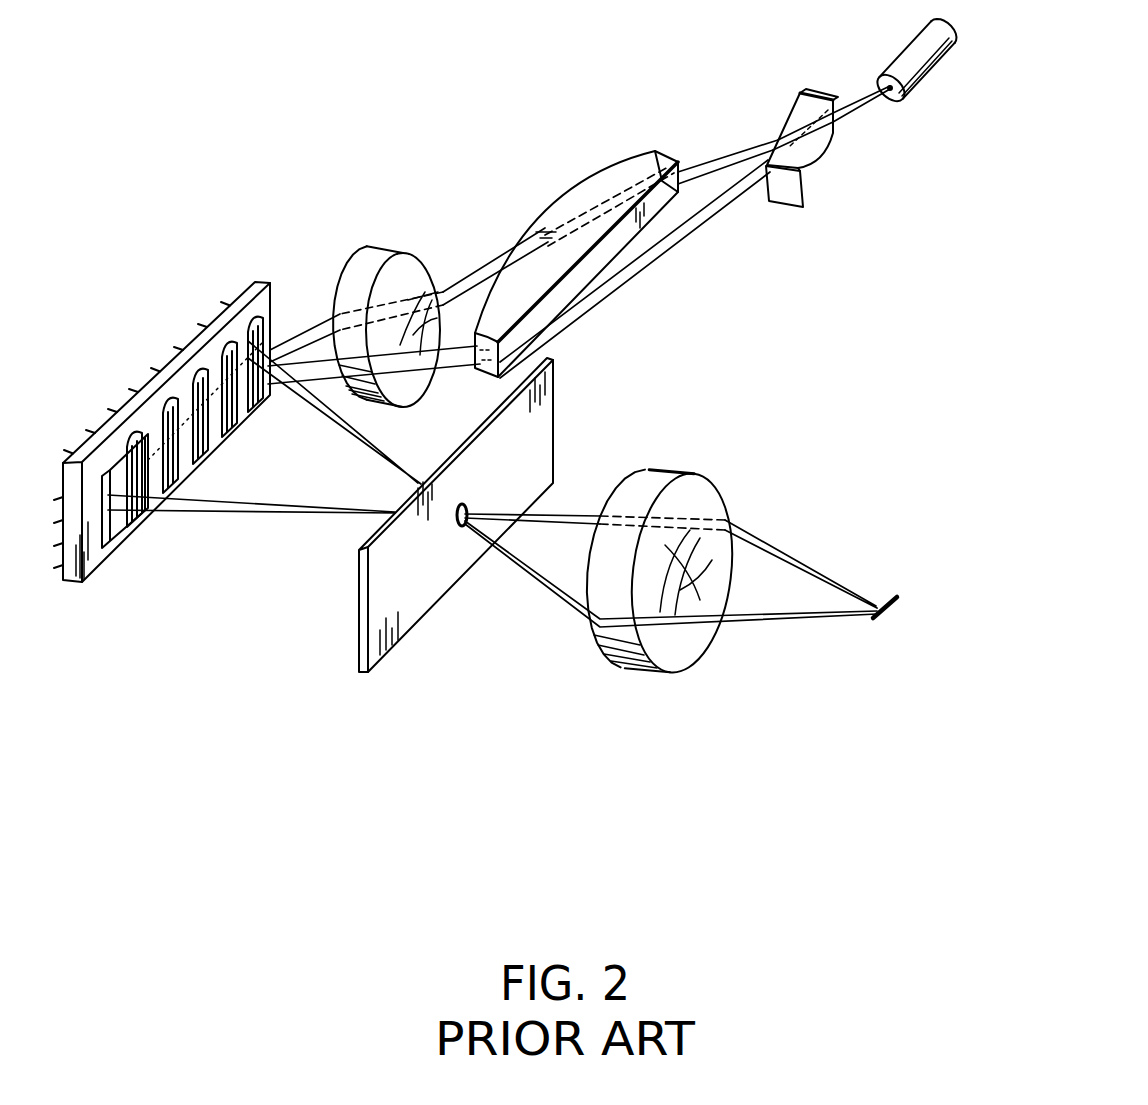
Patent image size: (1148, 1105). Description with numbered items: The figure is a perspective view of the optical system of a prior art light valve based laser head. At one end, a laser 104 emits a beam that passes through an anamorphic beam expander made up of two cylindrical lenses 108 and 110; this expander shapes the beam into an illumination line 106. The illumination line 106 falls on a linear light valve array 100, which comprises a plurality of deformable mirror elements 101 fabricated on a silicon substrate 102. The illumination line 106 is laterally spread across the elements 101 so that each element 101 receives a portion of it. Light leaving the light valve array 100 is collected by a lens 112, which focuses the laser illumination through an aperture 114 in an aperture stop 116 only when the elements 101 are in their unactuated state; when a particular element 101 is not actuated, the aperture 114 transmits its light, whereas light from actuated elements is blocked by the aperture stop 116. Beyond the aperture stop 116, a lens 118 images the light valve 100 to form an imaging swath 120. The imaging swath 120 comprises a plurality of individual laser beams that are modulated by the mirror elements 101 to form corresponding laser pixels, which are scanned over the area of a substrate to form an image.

The linear light valve array 100 is at (183, 411).
The deformable mirror elements 101 is at (148, 418).
The silicon substrate 102 is at (255, 282).
The laser 104 is at (908, 44).
The illumination line 106 is at (203, 447).
The cylindrical lens 108 is at (800, 95).
The cylindrical lens 110 is at (630, 163).
The lens 112 is at (362, 268).
The aperture 114 is at (465, 527).
The aperture stop 116 is at (495, 515).
The lens 118 is at (627, 492).
The imaging swath 120 is at (884, 596).